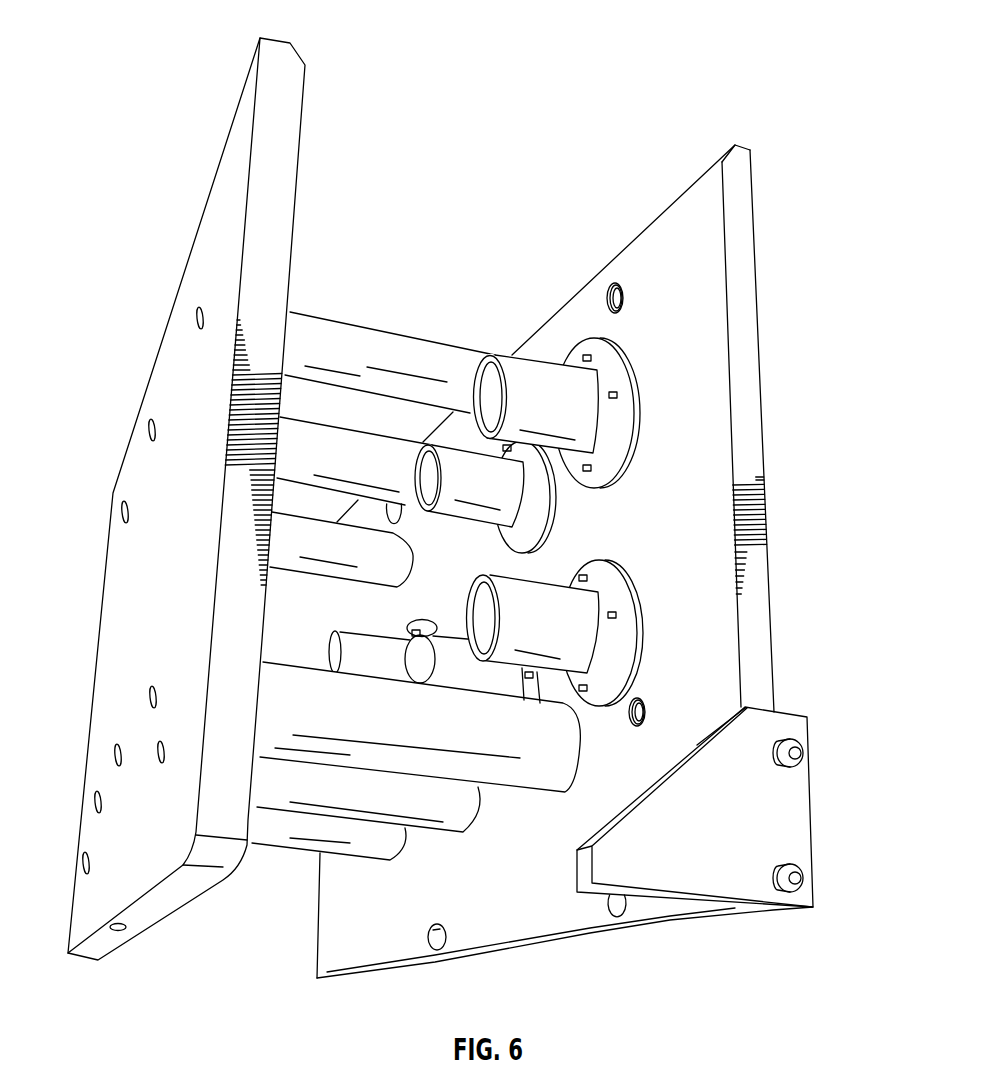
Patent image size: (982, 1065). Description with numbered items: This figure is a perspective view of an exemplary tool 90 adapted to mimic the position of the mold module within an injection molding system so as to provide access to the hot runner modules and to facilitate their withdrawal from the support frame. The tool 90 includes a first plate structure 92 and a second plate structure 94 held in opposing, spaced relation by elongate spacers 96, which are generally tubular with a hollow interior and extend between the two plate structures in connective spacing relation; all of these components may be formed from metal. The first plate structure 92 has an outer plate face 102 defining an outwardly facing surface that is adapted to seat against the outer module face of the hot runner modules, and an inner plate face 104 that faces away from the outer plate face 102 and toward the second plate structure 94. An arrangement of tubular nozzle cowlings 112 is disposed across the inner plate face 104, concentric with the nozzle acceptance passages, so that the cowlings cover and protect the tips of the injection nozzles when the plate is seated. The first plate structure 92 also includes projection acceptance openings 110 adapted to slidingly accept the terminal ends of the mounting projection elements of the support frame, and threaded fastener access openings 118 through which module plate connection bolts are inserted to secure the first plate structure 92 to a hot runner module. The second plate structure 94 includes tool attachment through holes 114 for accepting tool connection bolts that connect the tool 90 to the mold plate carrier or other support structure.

The tool 90 is at (726, 97).
The first plate structure 92 is at (559, 584).
The second plate structure 94 is at (152, 489).
The elongate spacers 96 is at (385, 330).
The outer plate face 102 is at (764, 437).
The inner plate face 104 is at (673, 238).
The projection acceptance openings 110 is at (436, 950).
The nozzle cowlings 112 is at (543, 358).
The tool attachment through holes 114 is at (195, 318).
The fastener access openings 118 is at (627, 303).